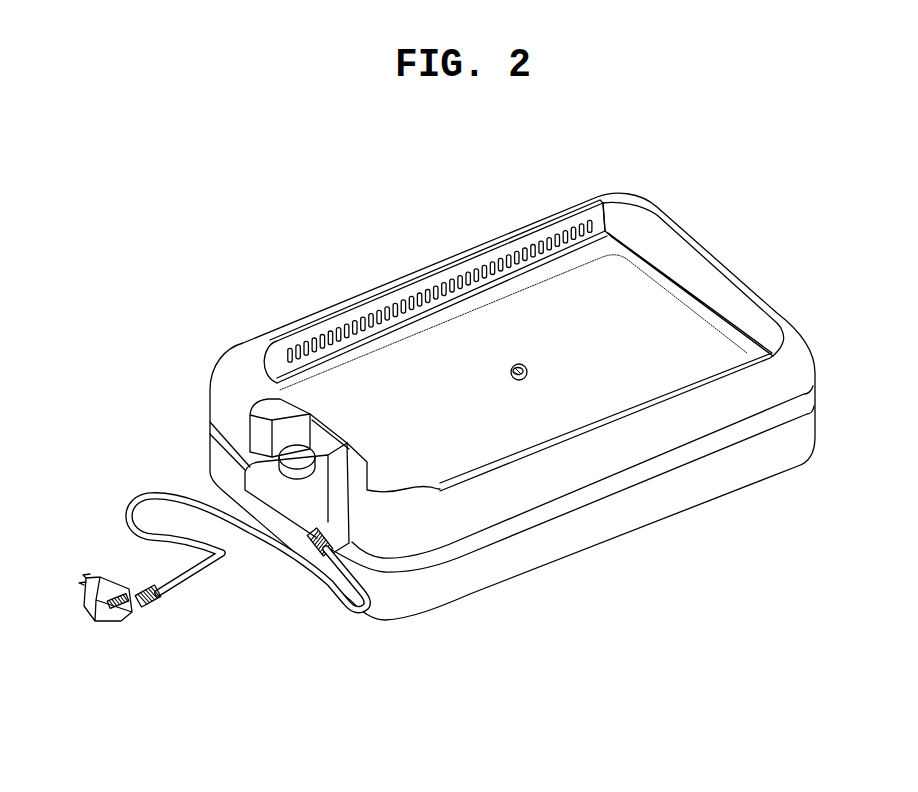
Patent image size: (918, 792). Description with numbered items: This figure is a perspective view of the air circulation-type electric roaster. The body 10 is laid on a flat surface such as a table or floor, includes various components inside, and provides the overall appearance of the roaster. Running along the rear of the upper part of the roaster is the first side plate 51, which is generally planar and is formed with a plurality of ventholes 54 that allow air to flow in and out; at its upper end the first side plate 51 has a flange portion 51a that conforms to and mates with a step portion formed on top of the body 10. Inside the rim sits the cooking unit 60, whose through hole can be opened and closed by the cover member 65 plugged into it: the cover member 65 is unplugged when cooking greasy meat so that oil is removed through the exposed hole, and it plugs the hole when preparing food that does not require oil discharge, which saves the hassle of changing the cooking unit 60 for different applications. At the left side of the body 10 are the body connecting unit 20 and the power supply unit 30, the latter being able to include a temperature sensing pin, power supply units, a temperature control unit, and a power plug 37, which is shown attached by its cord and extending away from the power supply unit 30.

The body 10 is at (240, 350).
The body connecting unit 20 is at (266, 407).
The power supply unit 30 is at (253, 478).
The power plug 37 is at (125, 615).
The first side plate 51 is at (598, 228).
The flange portion 51a is at (560, 242).
The ventholes 54 is at (492, 238).
The cooking unit 60 is at (407, 334).
The cover member 65 is at (527, 370).